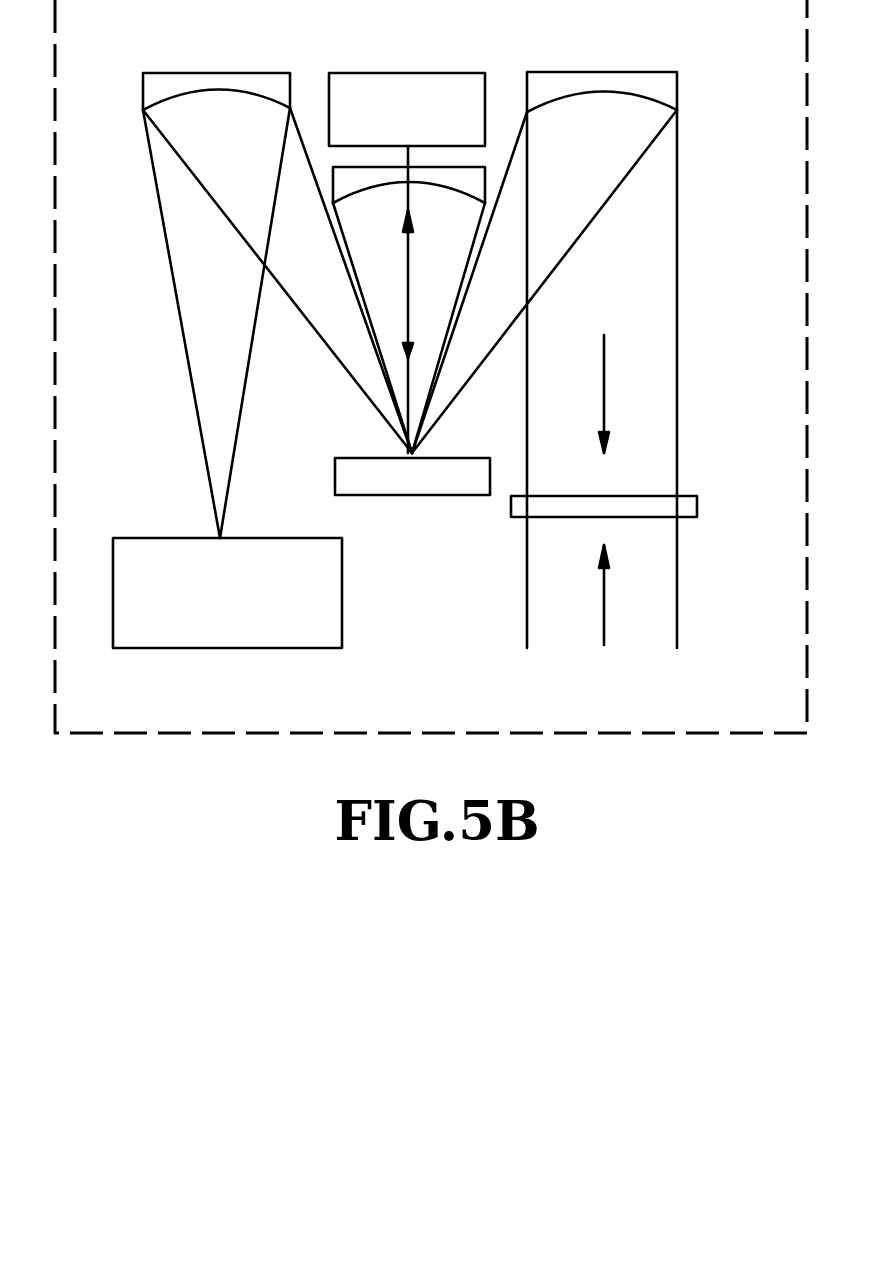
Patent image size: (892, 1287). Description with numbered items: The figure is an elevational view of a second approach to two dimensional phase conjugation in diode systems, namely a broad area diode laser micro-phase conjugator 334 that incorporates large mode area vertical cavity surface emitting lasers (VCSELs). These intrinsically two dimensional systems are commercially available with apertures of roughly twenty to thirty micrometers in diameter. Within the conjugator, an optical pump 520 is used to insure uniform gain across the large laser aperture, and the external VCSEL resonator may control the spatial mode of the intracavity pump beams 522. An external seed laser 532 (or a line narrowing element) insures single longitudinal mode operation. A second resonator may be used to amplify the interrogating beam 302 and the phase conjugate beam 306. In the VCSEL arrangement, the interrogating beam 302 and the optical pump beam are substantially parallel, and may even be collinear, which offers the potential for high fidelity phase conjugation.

The broad area diode laser micro-phase conjugator 334 is at (468, 712).
The seed laser 532 is at (390, 72).
The intracavity pump beams 522 is at (409, 318).
The phase conjugate beam 306 is at (604, 393).
The interrogating beam 302 is at (605, 610).
The optical pump 520 is at (342, 597).